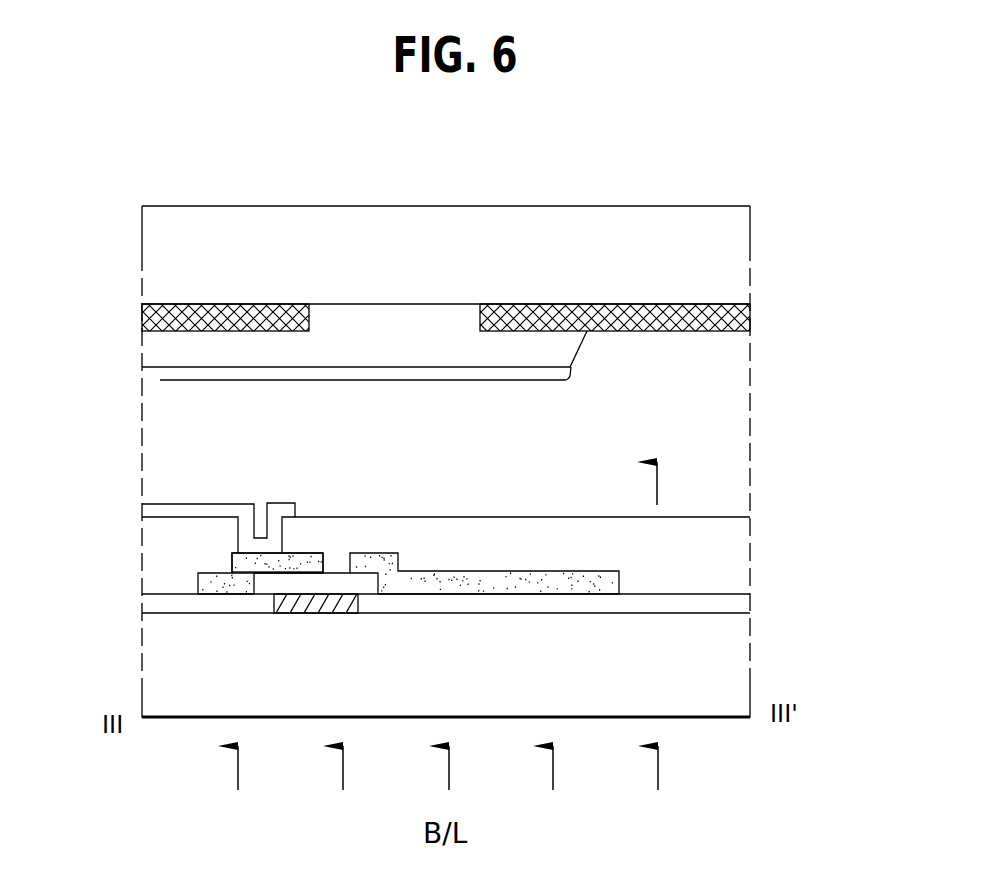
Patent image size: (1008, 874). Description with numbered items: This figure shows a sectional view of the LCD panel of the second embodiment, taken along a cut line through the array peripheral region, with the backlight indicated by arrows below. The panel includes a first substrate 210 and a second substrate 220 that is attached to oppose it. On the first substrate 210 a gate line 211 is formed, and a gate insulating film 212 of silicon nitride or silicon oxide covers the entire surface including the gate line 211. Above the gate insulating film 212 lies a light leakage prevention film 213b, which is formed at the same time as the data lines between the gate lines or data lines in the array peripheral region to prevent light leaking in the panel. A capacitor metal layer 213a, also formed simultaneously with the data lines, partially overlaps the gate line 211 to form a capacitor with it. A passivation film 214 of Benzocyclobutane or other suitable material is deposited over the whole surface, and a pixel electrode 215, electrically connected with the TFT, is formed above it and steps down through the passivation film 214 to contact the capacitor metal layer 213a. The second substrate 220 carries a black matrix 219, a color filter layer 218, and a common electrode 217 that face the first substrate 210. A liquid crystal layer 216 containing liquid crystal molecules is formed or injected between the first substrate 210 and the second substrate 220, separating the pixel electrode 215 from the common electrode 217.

The first substrate 210 is at (740, 660).
The gate line 211 is at (315, 618).
The gate insulating film 212 is at (740, 600).
The capacitor metal layer 213a is at (303, 557).
The light leakage prevention film 213b is at (507, 582).
The passivation film 214 is at (740, 548).
The pixel electrode 215 is at (158, 511).
The liquid crystal layer 216 is at (740, 402).
The common electrode 217 is at (160, 380).
The color filter layer 218 is at (155, 352).
The black matrix 219 is at (742, 315).
The second substrate 220 is at (740, 235).